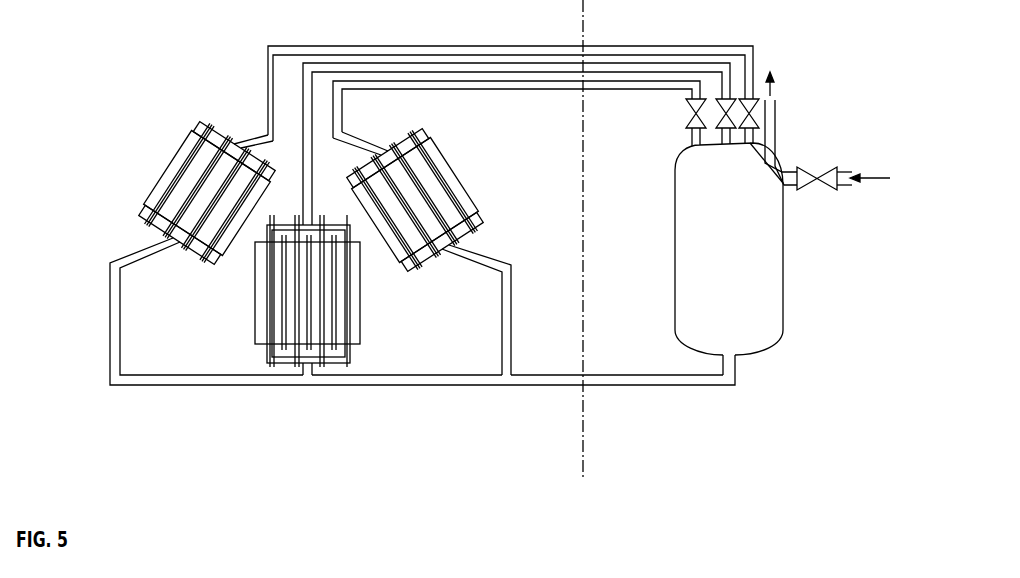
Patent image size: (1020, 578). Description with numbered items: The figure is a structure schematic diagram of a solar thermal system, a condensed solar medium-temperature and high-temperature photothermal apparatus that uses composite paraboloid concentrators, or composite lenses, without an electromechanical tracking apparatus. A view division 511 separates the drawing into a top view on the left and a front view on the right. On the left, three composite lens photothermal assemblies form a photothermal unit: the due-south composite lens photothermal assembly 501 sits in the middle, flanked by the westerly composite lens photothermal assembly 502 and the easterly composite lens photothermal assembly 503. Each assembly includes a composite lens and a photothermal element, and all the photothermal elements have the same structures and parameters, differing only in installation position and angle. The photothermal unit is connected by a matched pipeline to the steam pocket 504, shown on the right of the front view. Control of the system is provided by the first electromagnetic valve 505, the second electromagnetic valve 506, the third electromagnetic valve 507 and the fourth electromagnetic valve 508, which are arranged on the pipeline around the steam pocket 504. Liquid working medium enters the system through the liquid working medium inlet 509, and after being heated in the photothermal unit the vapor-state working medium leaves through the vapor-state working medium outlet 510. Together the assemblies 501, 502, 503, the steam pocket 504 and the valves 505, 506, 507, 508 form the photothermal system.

The due-south composite lens photothermal assembly 501 is at (260, 303).
The westerly composite lens photothermal assembly 502 is at (167, 167).
The easterly composite lens photothermal assembly 503 is at (398, 260).
The steam pocket 504 is at (715, 247).
The first electromagnetic valve 505 is at (692, 132).
The second electromagnetic valve 506 is at (728, 137).
The third electromagnetic valve 507 is at (773, 153).
The fourth electromagnetic valve 508 is at (832, 182).
The liquid working medium inlet 509 is at (855, 186).
The vapor-state working medium outlet 510 is at (775, 113).
The view division 511 is at (578, 218).